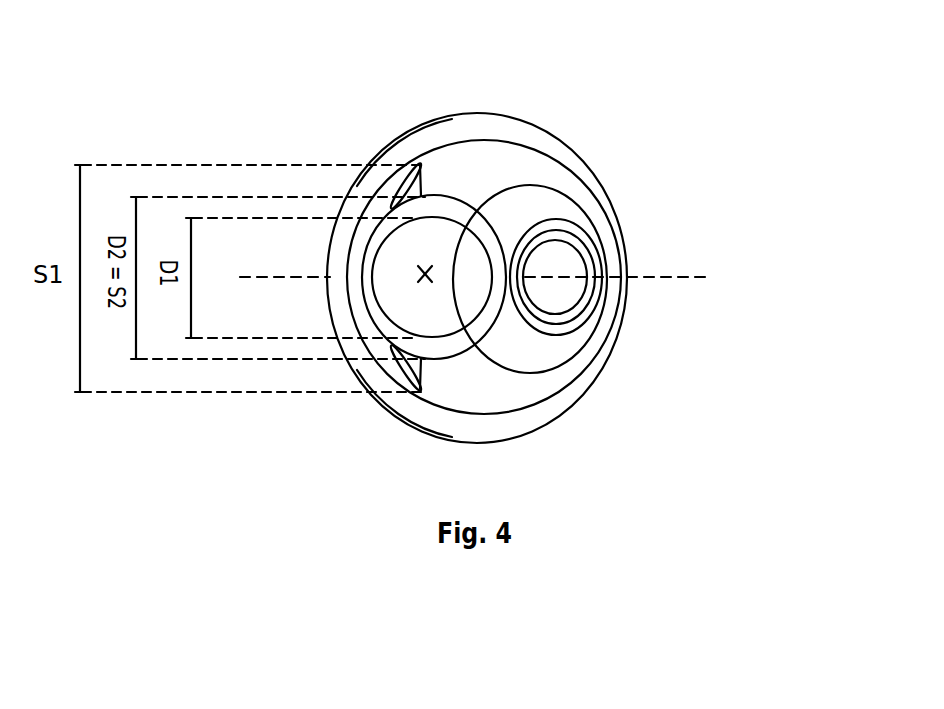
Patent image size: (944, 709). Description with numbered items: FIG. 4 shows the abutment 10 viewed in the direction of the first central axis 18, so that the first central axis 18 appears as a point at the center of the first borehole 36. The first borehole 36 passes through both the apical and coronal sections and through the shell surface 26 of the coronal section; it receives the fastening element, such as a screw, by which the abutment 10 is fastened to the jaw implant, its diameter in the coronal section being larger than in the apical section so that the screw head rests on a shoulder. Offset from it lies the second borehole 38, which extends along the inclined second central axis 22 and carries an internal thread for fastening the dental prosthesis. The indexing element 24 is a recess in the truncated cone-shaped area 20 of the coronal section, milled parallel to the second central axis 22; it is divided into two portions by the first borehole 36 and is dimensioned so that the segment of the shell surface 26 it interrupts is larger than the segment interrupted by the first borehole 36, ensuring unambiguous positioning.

The abutment 10 is at (730, 57).
The first central axis 18 is at (423, 274).
The truncated cone-shaped area 20 is at (505, 172).
The second central axis 22 is at (272, 279).
The indexing element 24 is at (418, 167).
The shell surface 26 is at (467, 173).
The first borehole 36 is at (408, 266).
The second borehole 38 is at (565, 262).